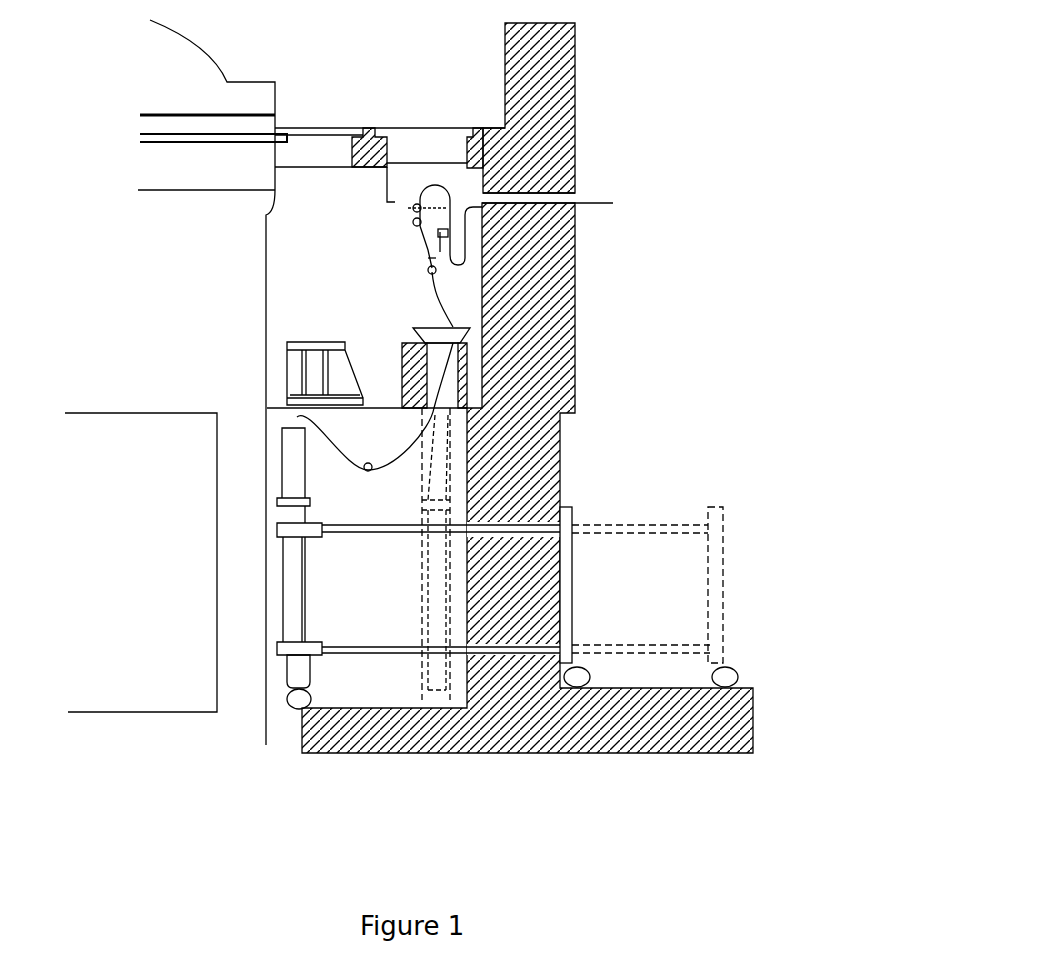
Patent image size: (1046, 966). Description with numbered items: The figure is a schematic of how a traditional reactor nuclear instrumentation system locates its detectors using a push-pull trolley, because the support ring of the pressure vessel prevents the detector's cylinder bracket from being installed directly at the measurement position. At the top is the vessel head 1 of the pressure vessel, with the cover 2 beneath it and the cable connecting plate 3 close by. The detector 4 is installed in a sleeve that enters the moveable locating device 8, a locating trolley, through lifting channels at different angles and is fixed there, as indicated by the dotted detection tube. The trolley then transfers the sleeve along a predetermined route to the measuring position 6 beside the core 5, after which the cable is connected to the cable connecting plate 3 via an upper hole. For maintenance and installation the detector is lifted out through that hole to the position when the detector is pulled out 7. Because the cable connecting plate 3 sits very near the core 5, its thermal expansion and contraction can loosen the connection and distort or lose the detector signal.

The vessel head 1 is at (165, 80).
The cover 2 is at (393, 132).
The cable connecting plate 3 is at (452, 198).
The detector 4 is at (286, 453).
The core 5 is at (141, 562).
The measuring position 6 is at (285, 668).
The position when the detector is pulled out 7 is at (437, 678).
The moveable locating device 8 is at (572, 573).